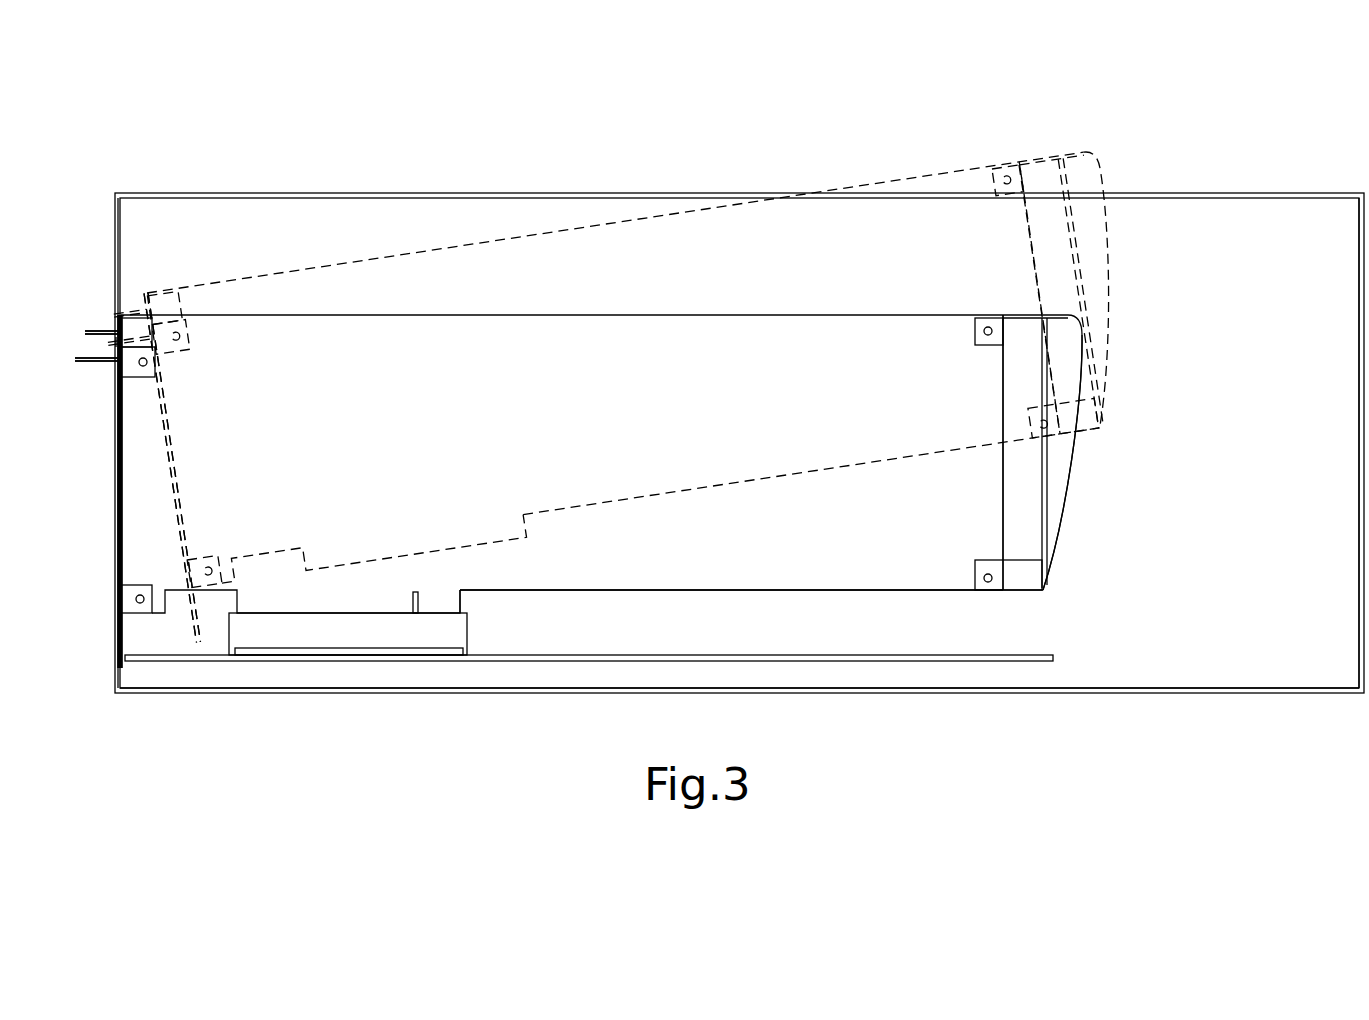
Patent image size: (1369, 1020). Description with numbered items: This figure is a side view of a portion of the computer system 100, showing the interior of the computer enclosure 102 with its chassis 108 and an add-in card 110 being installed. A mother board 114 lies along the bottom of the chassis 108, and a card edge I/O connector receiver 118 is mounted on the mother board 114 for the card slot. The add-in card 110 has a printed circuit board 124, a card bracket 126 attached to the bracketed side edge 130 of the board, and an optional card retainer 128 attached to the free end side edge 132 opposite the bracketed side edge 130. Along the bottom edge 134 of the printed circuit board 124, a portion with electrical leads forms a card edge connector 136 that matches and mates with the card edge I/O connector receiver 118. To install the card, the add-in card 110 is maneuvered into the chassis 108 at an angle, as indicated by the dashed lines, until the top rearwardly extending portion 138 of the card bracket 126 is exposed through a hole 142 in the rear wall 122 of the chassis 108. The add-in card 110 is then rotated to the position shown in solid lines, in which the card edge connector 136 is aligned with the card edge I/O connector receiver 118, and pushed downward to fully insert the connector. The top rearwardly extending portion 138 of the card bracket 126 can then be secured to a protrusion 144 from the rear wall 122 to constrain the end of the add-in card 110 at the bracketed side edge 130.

The computer system 100 is at (288, 133).
The computer enclosure 102 is at (533, 193).
The chassis 108 is at (1360, 456).
The add-in card 110 is at (215, 312).
The mother board 114 is at (877, 661).
The card edge I/O connector receiver 118 is at (280, 635).
The rear wall 122 is at (117, 278).
The printed circuit board 124 is at (733, 250).
The card bracket 126 is at (120, 492).
The card retainer 128 is at (1110, 338).
The bracketed side edge 130 is at (163, 425).
The free end side edge 132 is at (1005, 372).
The bottom edge 134 is at (582, 506).
The card edge connector 136 is at (455, 551).
The top rearwardly extending portion 138 is at (113, 315).
The hole 142 is at (118, 342).
The protrusion 144 is at (90, 361).